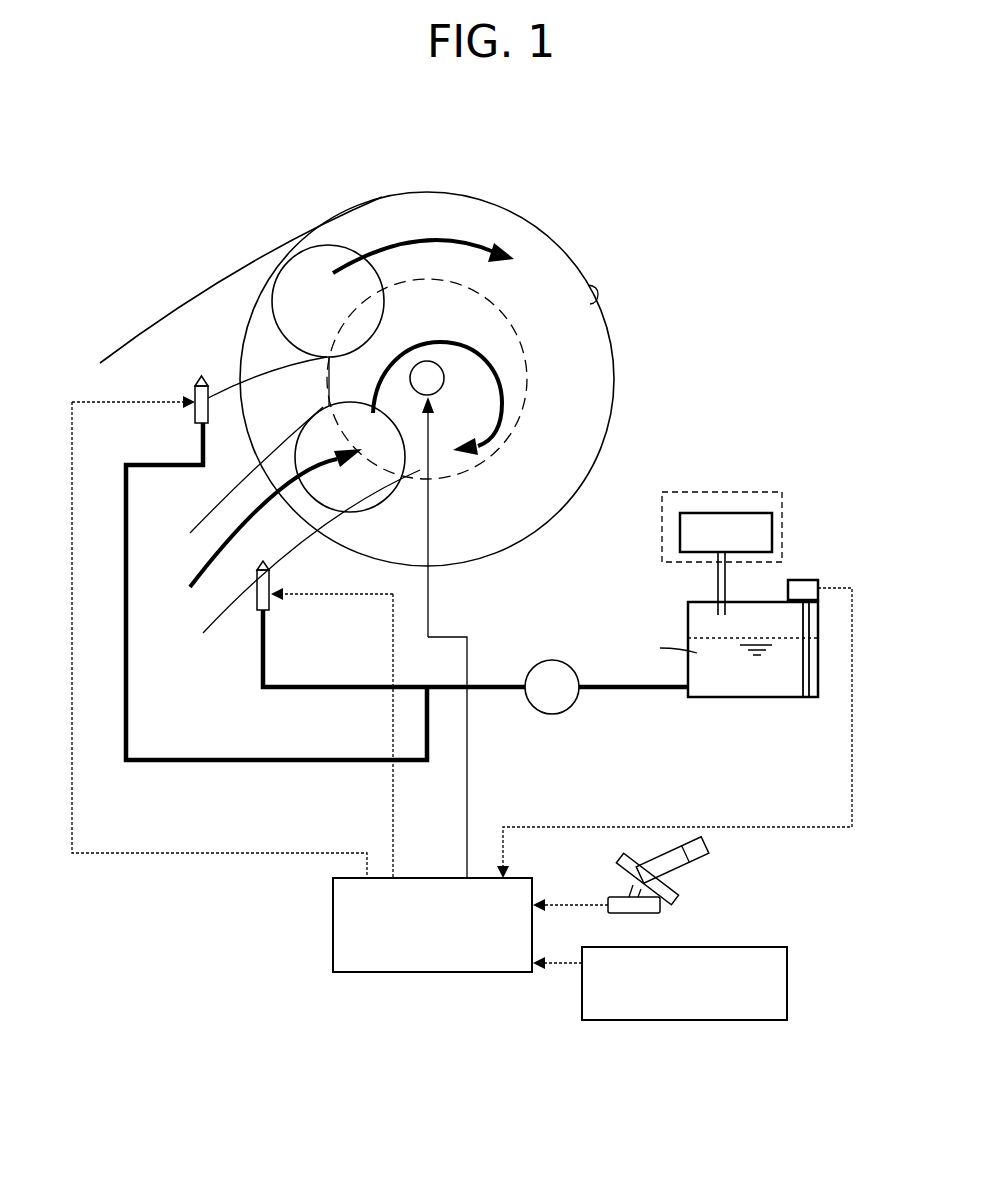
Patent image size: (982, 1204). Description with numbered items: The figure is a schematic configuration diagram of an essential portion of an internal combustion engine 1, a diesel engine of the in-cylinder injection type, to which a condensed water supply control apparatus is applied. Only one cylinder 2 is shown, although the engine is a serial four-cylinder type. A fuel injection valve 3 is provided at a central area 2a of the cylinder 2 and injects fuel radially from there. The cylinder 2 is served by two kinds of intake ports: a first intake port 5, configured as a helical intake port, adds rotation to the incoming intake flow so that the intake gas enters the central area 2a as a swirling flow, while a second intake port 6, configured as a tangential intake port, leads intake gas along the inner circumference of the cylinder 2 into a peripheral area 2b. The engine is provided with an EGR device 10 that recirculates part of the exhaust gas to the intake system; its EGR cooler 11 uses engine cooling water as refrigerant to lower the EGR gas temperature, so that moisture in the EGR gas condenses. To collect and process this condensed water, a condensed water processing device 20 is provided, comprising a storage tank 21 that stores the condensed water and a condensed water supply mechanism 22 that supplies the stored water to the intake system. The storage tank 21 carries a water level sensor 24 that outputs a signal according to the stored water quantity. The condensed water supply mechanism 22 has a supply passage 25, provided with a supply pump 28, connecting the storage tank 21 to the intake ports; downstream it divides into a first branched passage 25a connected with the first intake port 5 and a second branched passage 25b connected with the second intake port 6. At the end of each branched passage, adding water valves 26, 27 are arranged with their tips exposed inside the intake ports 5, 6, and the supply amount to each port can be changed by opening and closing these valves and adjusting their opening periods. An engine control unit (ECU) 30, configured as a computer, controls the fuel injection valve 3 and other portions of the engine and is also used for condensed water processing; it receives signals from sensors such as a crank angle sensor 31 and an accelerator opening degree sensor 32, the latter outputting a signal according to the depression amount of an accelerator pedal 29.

The internal combustion engine 1 is at (605, 178).
The cylinder 2 is at (603, 302).
The central area 2a is at (533, 397).
The peripheral area 2b is at (580, 435).
The fuel injection valve 3 is at (442, 388).
The first intake port 5 is at (295, 548).
The second intake port 6 is at (193, 296).
The EGR device 10 is at (728, 491).
The EGR cooler 11 is at (695, 530).
The condensed water processing device 20 is at (809, 460).
The storage tank 21 is at (688, 607).
The condensed water supply mechanism 22 is at (630, 715).
The water level sensor 24 is at (805, 580).
The supply passage 25 is at (436, 606).
The first branched passage 25a is at (365, 684).
The second branched passage 25b is at (248, 759).
The adding water valve 26 is at (258, 606).
The adding water valve 27 is at (193, 424).
The supply pump 28 is at (553, 661).
The accelerator pedal 29 is at (616, 860).
The engine control unit (ECU) 30 is at (333, 922).
The crank angle sensor 31 is at (792, 965).
The accelerator opening degree sensor 32 is at (663, 908).